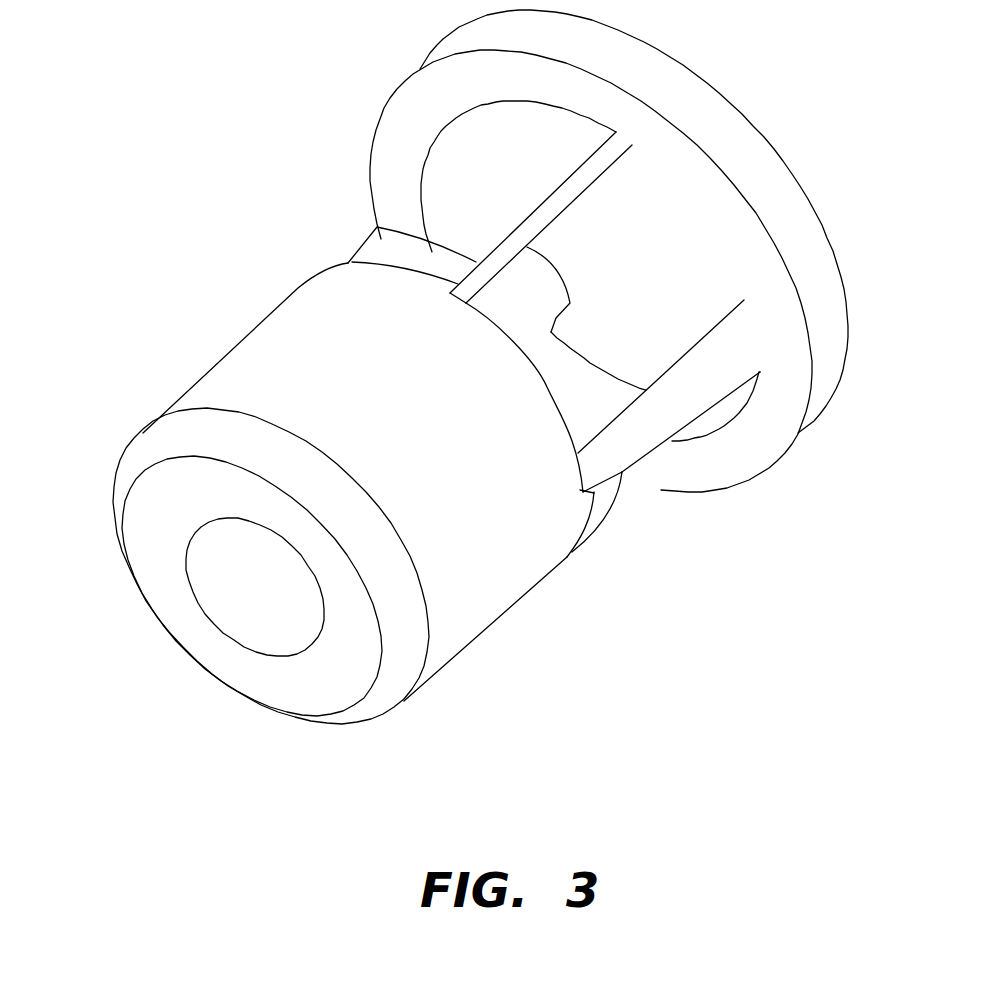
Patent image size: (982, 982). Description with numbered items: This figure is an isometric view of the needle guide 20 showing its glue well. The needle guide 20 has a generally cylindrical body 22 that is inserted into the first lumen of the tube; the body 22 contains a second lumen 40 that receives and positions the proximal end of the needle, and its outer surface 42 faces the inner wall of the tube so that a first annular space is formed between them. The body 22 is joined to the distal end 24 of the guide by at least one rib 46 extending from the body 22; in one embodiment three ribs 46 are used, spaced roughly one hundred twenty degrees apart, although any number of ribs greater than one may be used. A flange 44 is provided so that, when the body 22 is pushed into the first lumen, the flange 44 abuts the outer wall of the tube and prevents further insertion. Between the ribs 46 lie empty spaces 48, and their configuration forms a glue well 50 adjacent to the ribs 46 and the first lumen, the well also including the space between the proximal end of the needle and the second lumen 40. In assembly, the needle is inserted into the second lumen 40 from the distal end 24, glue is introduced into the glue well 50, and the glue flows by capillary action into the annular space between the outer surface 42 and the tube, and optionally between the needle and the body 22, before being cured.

The needle guide 20 is at (790, 635).
The body 22 is at (433, 725).
The distal end 24 is at (663, 251).
The second lumen 40 is at (252, 587).
The outer surface 42 is at (477, 603).
The flange 44 is at (832, 259).
The rib 46 is at (412, 223).
The empty spaces 48 is at (642, 188).
The glue well 50 is at (640, 265).